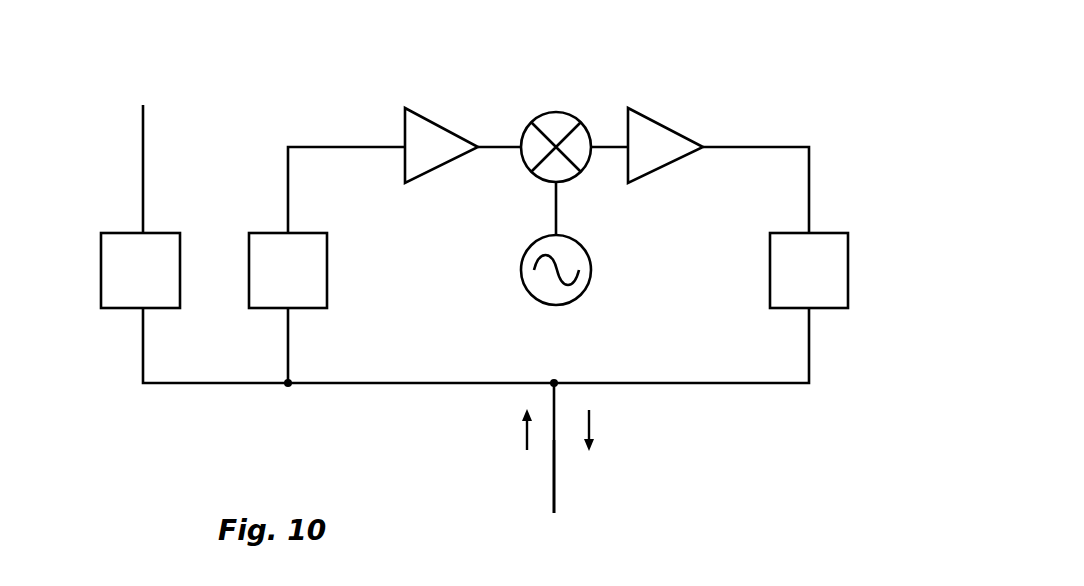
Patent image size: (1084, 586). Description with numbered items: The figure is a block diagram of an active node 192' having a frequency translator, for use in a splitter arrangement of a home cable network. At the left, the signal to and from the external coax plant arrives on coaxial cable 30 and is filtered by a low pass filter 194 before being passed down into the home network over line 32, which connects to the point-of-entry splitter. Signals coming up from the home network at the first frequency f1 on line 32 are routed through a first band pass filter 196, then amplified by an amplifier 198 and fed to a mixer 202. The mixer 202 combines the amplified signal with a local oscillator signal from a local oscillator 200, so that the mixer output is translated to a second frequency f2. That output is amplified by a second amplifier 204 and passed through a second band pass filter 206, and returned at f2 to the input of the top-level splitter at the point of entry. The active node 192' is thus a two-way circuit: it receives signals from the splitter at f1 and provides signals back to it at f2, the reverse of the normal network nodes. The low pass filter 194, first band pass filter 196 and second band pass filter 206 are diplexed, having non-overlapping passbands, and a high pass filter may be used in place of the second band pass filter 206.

The active node 192' is at (448, 276).
The coaxial cable 30 is at (143, 165).
The line 32 is at (555, 496).
The low pass filter 194 is at (191, 221).
The first band pass filter 196 is at (327, 252).
The amplifier 198 is at (416, 181).
The local oscillator 200 is at (543, 304).
The mixer 202 is at (557, 112).
The amplifier 204 is at (652, 115).
The second band pass filter 206 is at (769, 258).